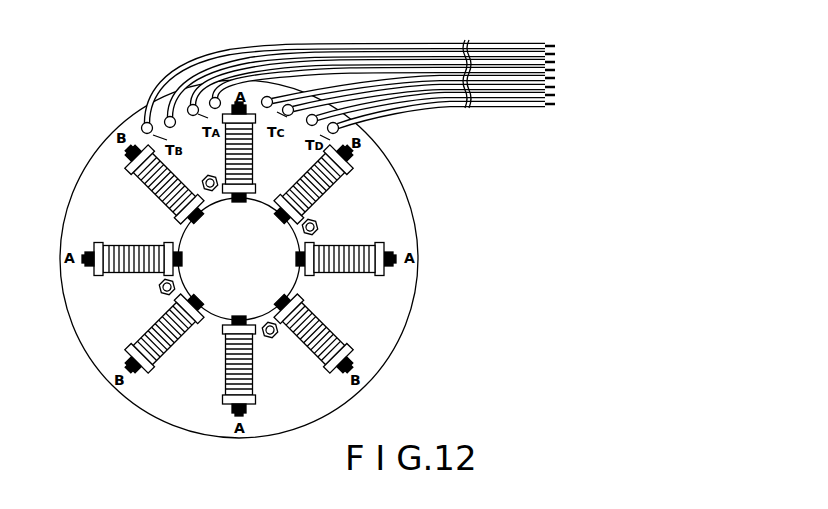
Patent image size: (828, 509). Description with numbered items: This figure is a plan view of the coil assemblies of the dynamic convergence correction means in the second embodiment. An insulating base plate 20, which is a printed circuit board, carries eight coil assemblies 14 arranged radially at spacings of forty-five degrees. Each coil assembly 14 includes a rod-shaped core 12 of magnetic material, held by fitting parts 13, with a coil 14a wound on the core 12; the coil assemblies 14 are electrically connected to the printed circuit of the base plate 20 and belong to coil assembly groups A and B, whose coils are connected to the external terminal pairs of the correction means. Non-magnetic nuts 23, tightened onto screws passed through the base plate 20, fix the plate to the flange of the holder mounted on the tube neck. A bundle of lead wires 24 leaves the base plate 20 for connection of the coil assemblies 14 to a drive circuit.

The rod-shaped core 12 is at (380, 244).
The fitting part 13 is at (385, 273).
The coil assembly 14 is at (366, 297).
The coil 14a is at (344, 278).
The insulating base plate 20 is at (408, 322).
The non-magnetic nut 23 is at (322, 222).
The lead wires 24 is at (345, 44).